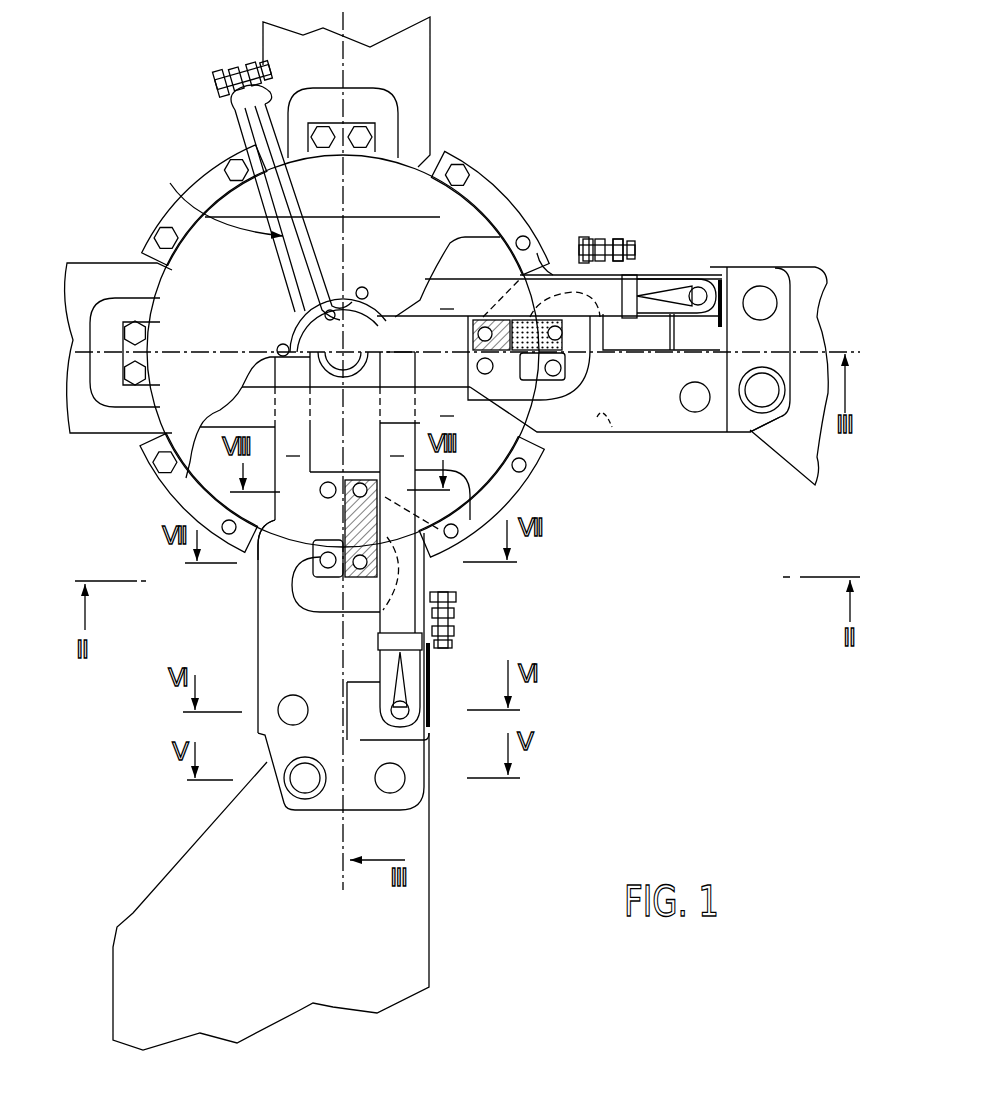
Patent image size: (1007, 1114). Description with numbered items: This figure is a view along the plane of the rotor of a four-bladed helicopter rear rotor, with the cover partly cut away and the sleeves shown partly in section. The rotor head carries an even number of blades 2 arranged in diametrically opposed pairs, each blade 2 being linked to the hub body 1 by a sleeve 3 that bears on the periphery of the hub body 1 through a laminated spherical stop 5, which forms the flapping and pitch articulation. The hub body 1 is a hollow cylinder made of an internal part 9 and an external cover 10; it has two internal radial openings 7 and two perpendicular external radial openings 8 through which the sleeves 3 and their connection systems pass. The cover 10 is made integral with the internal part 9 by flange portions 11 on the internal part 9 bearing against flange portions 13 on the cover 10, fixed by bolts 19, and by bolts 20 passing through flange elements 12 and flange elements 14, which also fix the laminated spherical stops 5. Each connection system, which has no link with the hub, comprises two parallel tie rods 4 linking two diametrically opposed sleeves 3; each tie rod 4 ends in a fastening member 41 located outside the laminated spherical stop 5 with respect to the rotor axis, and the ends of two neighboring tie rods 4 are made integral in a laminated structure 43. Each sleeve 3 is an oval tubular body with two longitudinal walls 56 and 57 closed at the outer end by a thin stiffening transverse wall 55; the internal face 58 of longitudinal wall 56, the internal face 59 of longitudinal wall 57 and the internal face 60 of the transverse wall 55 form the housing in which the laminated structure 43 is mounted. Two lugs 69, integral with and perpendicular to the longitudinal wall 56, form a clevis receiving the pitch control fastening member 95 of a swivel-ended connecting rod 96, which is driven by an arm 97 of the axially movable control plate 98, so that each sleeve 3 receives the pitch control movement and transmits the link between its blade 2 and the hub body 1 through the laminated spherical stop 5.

The hub body 1 is at (439, 234).
The blade 2 is at (797, 280).
The sleeve 3 is at (417, 70).
The tie rod 4 is at (453, 456).
The laminated spherical stop 5 is at (556, 390).
The internal radial opening 7 is at (257, 545).
The external radial opening 8 is at (538, 265).
The internal part 9 is at (483, 450).
The cover 10 is at (210, 282).
The flange portion 11 is at (180, 490).
The flange element 12 is at (330, 123).
The flange portion 13 is at (205, 185).
The flange element 14 is at (348, 125).
The bolt 19 is at (158, 228).
The bolt 20 is at (357, 147).
The fastening member 41 is at (682, 280).
The laminated structure 43 is at (728, 425).
The transverse wall 55 is at (735, 275).
The longitudinal wall 56 is at (670, 274).
The longitudinal wall 57 is at (680, 432).
The internal face 58 is at (650, 274).
The internal face 59 is at (600, 415).
The internal face 60 is at (716, 278).
The lug 69 is at (590, 237).
The fastening member 95 is at (605, 245).
The swivel-ended connecting rod 96 is at (232, 63).
The arm 97 is at (258, 135).
The control plate 98 is at (213, 195).